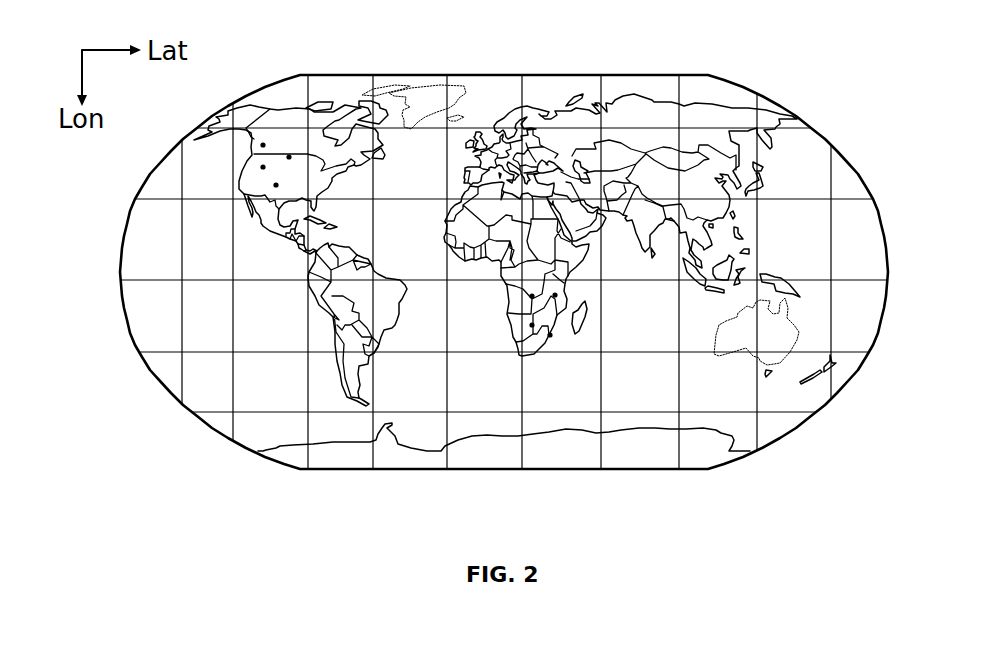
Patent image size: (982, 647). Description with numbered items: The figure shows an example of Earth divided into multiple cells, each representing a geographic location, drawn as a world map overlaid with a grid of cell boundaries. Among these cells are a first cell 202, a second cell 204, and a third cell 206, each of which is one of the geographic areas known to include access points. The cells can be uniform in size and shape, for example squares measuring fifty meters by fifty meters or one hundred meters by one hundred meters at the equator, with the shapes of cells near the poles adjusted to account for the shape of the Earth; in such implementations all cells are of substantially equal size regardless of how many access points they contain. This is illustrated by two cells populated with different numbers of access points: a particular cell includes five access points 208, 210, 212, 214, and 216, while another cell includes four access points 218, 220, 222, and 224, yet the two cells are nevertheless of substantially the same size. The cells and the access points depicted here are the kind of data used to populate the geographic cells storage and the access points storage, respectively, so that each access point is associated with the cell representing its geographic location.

The first cell 202 is at (197, 405).
The second cell 204 is at (262, 398).
The third cell 206 is at (342, 400).
The access point 208 is at (289, 157).
The access point 210 is at (263, 145).
The access point 212 is at (263, 167).
The access point 214 is at (276, 186).
The access point 216 is at (290, 138).
The access point 218 is at (532, 325).
The access point 220 is at (550, 335).
The access point 222 is at (532, 296).
The access point 224 is at (555, 295).